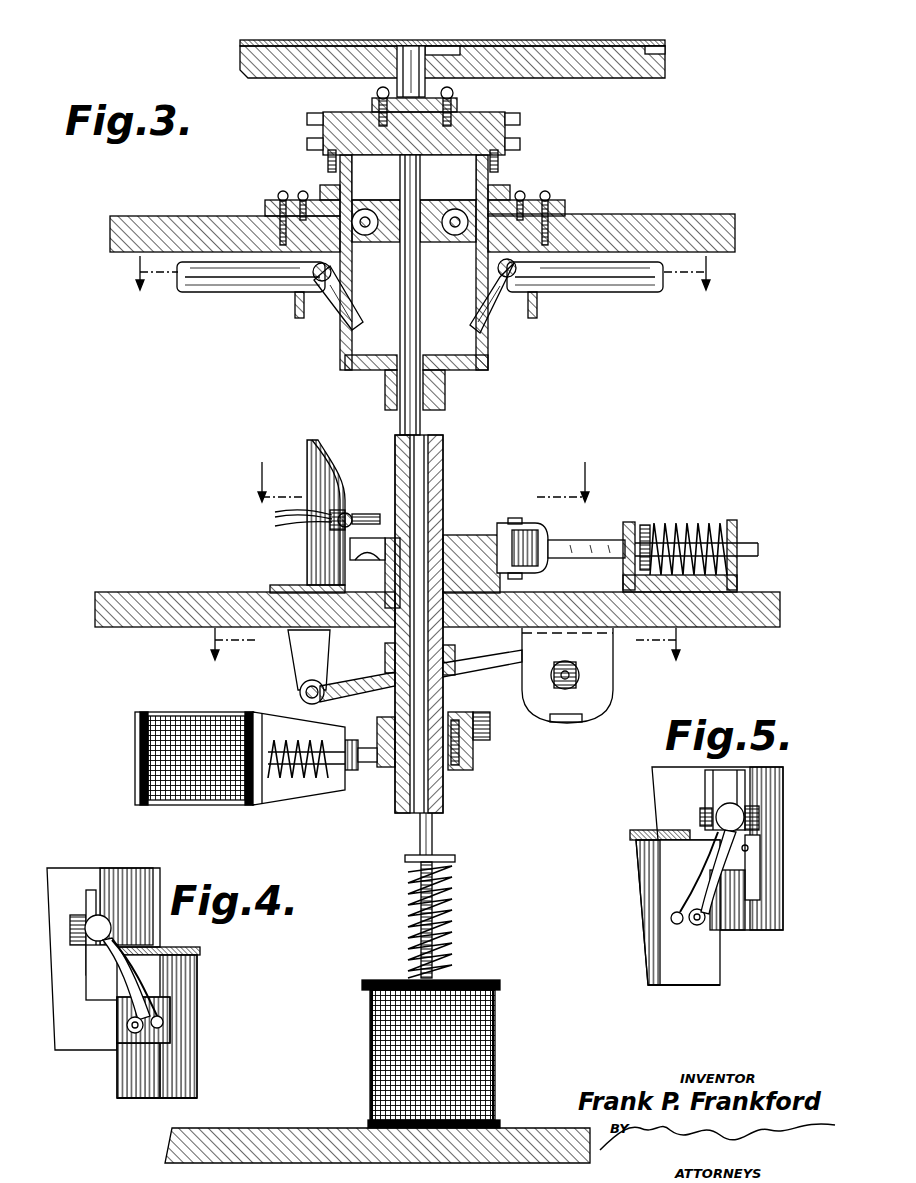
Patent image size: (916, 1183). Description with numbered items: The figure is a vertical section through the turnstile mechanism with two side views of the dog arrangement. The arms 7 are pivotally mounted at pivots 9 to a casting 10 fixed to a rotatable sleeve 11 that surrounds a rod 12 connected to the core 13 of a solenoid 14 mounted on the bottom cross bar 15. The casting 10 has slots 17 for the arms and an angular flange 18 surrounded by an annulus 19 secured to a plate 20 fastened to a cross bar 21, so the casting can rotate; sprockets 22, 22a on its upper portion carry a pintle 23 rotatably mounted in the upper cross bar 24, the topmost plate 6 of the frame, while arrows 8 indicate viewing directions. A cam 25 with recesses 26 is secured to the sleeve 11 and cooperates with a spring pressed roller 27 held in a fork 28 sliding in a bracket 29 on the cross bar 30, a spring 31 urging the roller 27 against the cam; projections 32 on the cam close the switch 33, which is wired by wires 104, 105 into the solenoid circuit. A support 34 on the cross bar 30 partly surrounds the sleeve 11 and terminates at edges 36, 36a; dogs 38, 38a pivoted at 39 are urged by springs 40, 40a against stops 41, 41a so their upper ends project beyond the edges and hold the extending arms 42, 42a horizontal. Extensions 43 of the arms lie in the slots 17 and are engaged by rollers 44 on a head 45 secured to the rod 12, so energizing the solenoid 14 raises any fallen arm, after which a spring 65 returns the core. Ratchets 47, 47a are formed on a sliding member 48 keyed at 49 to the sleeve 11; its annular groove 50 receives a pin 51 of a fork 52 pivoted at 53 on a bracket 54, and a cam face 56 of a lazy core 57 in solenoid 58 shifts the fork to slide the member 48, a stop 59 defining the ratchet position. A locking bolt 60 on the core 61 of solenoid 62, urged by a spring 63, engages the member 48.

In FIG. 3, the table plate 6 is at (276, 41).
In FIG. 3, the upper cross bar 24 is at (588, 52).
In FIG. 3, the pintle 23 is at (420, 56).
In FIG. 3, the sprocket 22a is at (516, 117).
In FIG. 3, the sprocket 22 is at (307, 145).
In FIG. 3, the angular flange 18 is at (326, 191).
In FIG. 3, the head 45 is at (428, 201).
In FIG. 3, the annulus 19 is at (512, 196).
In FIG. 3, the plate 20 is at (270, 204).
In FIG. 3, the cross bar 21 is at (608, 215).
In FIG. 3, the arms 7 is at (678, 310).
In FIG. 3, the extending arm 42 is at (182, 292).
In FIG. 4, the extending arm 42 is at (102, 912).
In FIG. 3, the extending arm 42a is at (666, 279).
In FIG. 5, the extending arm 42a is at (736, 815).
In FIG. 3, the rollers 44 is at (368, 236).
In FIG. 3, the pivots 9 is at (334, 273).
In FIG. 4, the pivots 9 is at (118, 928).
In FIG. 5, the pivots 9 is at (760, 818).
In FIG. 3, the slots 17 is at (492, 278).
In FIG. 4, the slots 17 is at (91, 976).
In FIG. 5, the slots 17 is at (749, 849).
In FIG. 3, the extensions 43 is at (360, 320).
In FIG. 3, the dog 38 is at (298, 318).
In FIG. 4, the dog 38 is at (128, 976).
In FIG. 3, the dog 38a is at (535, 318).
In FIG. 5, the dog 38a is at (712, 871).
In FIG. 3, the rod 12 is at (418, 341).
In FIG. 3, the casting 10 is at (488, 364).
In FIG. 4, the casting 10 is at (58, 876).
In FIG. 5, the casting 10 is at (668, 806).
In FIG. 3, the support 34 is at (306, 456).
In FIG. 4, the support 34 is at (198, 1029).
In FIG. 5, the support 34 is at (652, 958).
In FIG. 3, the rotatable sleeve 11 is at (444, 462).
In FIG. 3, the section line 8 is at (425, 485).
In FIG. 3, the switch 33 is at (350, 512).
In FIG. 3, the wires 104 is at (280, 515).
In FIG. 3, the wire 105 is at (286, 528).
In FIG. 3, the cam 25 is at (452, 545).
In FIG. 3, the recesses 26 is at (498, 524).
In FIG. 3, the spring pressed roller 27 is at (528, 532).
In FIG. 3, the fork 28 is at (562, 541).
In FIG. 3, the spring 31 is at (666, 532).
In FIG. 3, the bracket 29 is at (737, 526).
In FIG. 3, the projections 32 is at (374, 561).
In FIG. 3, the cross bar 30 is at (753, 612).
In FIG. 3, the bracket 54 is at (293, 656).
In FIG. 3, the pivot 53 is at (300, 691).
In FIG. 3, the pin 51 is at (386, 656).
In FIG. 3, the annular groove 50 is at (459, 668).
In FIG. 3, the fork 52 is at (495, 671).
In FIG. 3, the solenoid 58 is at (602, 652).
In FIG. 3, the cam face 56 is at (580, 676).
In FIG. 3, the lazy core 57 is at (570, 686).
In FIG. 3, the stop 59 is at (582, 722).
In FIG. 3, the core 61 is at (218, 742).
In FIG. 3, the ratchet 47a is at (378, 731).
In FIG. 3, the ratchet 47 is at (490, 727).
In FIG. 3, the sliding ratchet member 48 is at (474, 752).
In FIG. 3, the key 49 is at (458, 771).
In FIG. 3, the locking bolt 60 is at (365, 771).
In FIG. 3, the solenoid 62 is at (200, 801).
In FIG. 3, the spring 63 is at (291, 791).
In FIG. 3, the core 13 is at (408, 899).
In FIG. 3, the spring 65 is at (450, 938).
In FIG. 3, the solenoid 14 is at (495, 1031).
In FIG. 3, the bottom cross bar 15 is at (300, 1124).
In FIG. 4, the edge 36 is at (118, 1090).
In FIG. 4, the pivot 39 is at (134, 1031).
In FIG. 4, the spring 40 is at (160, 1020).
In FIG. 4, the stop 41 is at (121, 1006).
In FIG. 5, the spring 40a is at (680, 916).
In FIG. 5, the stop 41a is at (720, 902).
In FIG. 5, the edge 36a is at (722, 982).